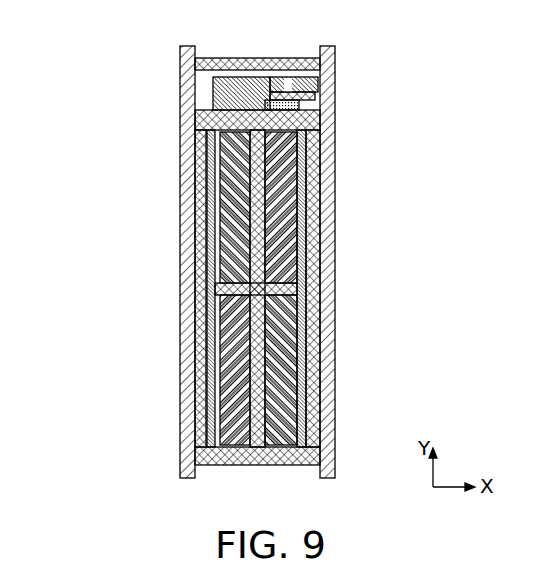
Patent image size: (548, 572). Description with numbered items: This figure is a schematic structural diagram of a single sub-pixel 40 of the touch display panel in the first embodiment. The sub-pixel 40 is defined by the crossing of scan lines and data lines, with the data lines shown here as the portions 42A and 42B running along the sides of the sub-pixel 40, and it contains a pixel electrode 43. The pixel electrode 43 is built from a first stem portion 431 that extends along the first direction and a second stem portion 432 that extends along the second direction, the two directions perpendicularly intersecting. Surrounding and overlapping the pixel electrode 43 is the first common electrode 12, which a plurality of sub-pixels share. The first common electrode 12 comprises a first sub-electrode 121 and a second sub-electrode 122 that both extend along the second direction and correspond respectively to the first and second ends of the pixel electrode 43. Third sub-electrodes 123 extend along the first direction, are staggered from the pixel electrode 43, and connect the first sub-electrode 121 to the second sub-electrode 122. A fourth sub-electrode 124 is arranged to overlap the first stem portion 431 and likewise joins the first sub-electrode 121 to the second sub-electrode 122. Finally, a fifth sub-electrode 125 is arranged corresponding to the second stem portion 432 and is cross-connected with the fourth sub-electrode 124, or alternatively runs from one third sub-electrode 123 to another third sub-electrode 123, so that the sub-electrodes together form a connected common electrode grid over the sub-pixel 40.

The sub-pixel 40 is at (143, 55).
The first common electrode 12 is at (88, 111).
The first sub-electrode 121 is at (186, 128).
The second sub-electrode 122 is at (186, 460).
The third sub-electrode 123 is at (186, 205).
The fourth sub-electrode 124 is at (206, 258).
The fifth sub-electrode 125 is at (214, 290).
The upper liquid crystal layer 42A is at (294, 137).
The lower liquid crystal layer 42B is at (289, 433).
The pixel electrode 43 is at (420, 228).
The first stem portion 431 is at (302, 244).
The second stem portion 432 is at (297, 284).